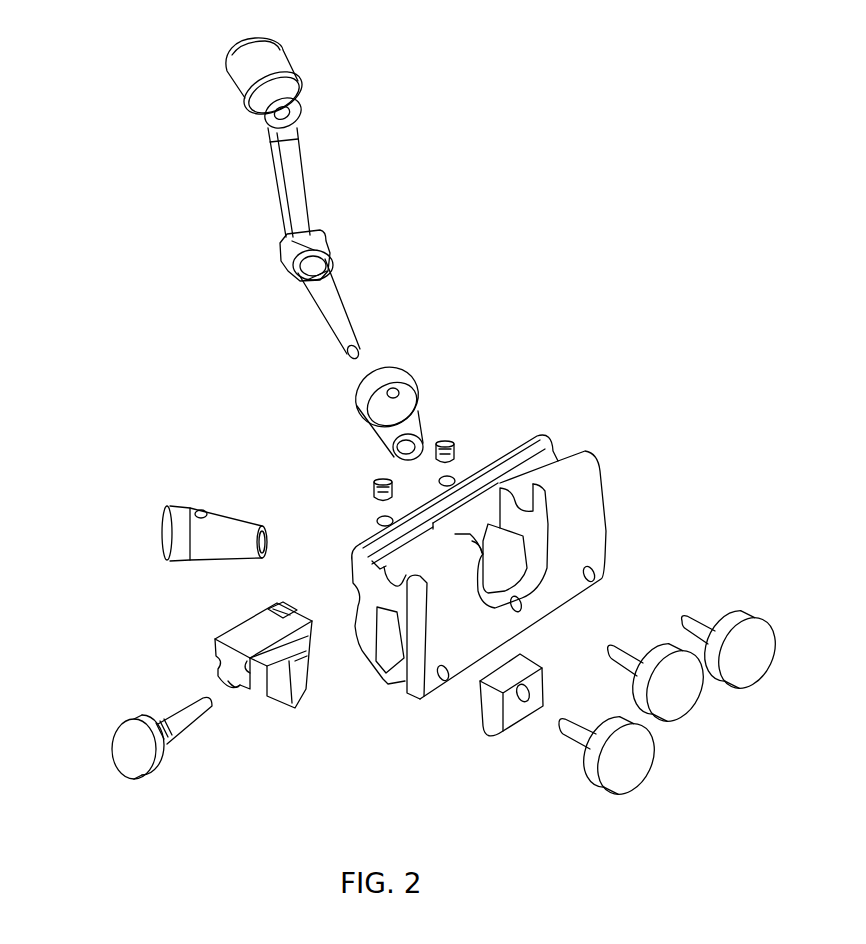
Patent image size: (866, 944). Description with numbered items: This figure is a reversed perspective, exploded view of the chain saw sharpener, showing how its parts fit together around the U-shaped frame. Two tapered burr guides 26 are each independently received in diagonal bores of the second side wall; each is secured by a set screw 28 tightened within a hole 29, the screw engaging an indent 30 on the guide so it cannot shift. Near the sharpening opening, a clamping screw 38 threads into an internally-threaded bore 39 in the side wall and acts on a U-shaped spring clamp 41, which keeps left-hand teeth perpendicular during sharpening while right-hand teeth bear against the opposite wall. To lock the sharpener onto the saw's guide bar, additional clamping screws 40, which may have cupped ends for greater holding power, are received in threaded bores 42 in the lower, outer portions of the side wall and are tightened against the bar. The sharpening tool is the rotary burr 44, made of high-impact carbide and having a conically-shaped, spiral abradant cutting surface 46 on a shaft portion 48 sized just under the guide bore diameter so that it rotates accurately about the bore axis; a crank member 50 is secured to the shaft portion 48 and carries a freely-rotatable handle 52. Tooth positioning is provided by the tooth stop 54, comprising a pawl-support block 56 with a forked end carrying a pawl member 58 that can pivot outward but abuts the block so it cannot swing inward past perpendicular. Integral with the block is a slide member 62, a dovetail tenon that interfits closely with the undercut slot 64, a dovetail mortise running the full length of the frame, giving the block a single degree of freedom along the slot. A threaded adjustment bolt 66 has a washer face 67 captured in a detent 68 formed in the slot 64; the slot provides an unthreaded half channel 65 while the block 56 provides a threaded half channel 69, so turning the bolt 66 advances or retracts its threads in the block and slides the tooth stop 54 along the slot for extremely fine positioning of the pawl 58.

The burr guide 26 is at (421, 410).
The set screw 28 is at (445, 432).
The hole 29 is at (447, 469).
The indent 30 is at (397, 388).
The clamping screw 38 is at (692, 706).
The internally-threaded bore 39 is at (526, 604).
The clamping screw 40 is at (775, 621).
The spring clamp 41 is at (480, 712).
The threaded bore 42 is at (594, 563).
The rotary burr 44 is at (405, 188).
The abradant cutting surface 46 is at (353, 310).
The shaft portion 48 is at (322, 262).
The crank member 50 is at (322, 128).
The handle 52 is at (280, 58).
The tooth stop 54 is at (180, 651).
The pawl-support block 56 is at (232, 622).
The pawl member 58 is at (306, 678).
The slide member 62 is at (250, 668).
The undercut slot 64 is at (372, 564).
The half channel 65 is at (420, 573).
The adjustment bolt 66 is at (112, 742).
The washer face 67 is at (156, 720).
The detent 68 is at (392, 586).
The half channel 69 is at (236, 690).